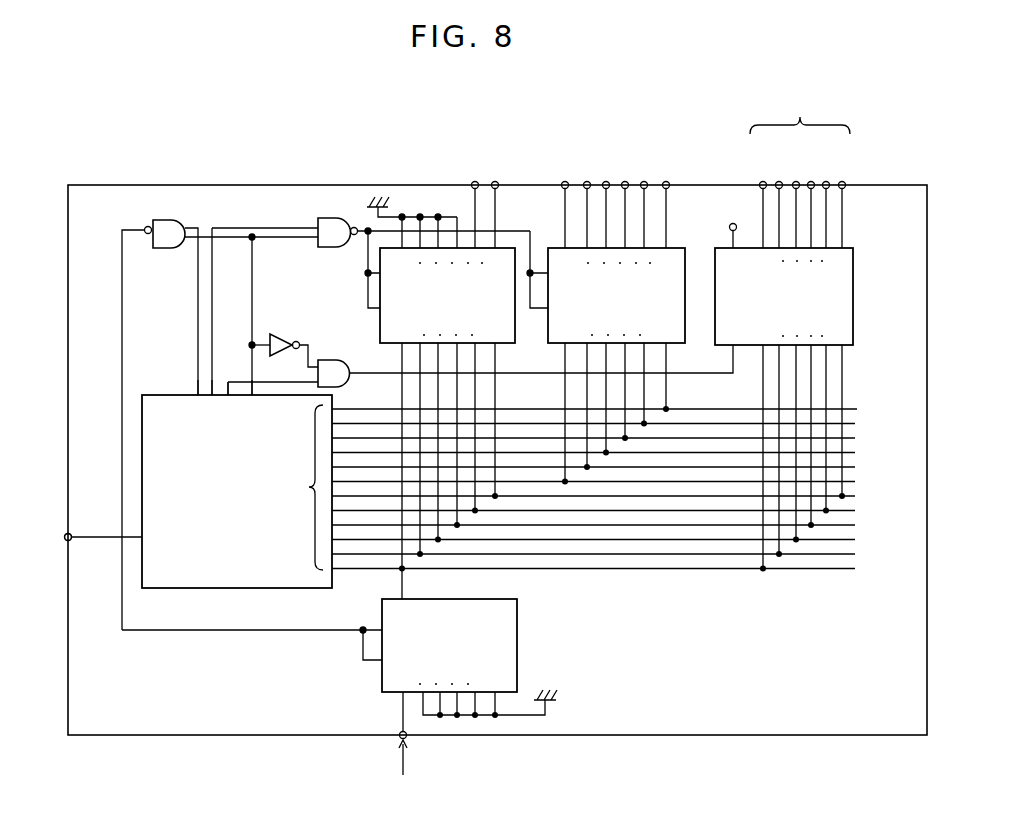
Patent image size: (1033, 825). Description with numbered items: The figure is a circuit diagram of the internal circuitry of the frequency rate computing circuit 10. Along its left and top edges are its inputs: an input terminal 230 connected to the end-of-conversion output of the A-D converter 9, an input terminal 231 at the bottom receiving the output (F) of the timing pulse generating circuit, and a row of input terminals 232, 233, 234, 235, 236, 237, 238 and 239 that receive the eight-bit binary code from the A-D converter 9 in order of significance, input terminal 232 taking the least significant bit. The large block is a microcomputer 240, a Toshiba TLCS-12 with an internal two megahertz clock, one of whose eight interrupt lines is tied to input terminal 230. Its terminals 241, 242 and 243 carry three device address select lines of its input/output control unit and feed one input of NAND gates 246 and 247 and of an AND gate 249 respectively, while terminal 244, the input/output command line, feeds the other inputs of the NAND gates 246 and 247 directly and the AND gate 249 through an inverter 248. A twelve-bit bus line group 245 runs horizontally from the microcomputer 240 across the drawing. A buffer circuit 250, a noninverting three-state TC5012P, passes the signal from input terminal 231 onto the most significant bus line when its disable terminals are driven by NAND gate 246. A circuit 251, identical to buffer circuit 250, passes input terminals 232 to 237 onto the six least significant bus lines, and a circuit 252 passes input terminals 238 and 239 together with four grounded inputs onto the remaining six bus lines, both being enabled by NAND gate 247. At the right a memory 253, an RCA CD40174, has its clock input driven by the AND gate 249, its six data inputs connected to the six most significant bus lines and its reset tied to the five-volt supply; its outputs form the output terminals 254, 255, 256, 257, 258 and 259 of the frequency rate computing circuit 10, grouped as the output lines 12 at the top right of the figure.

The A-D converter 9 is at (677, 136).
The frequency rate computing circuit 10 is at (200, 185).
The output signal lines 12 is at (807, 96).
The input terminal 230 is at (65, 541).
The input terminal 231 is at (406, 740).
The input terminal 232 is at (669, 183).
The input terminal 233 is at (645, 182).
The input terminal 234 is at (626, 182).
The input terminal 235 is at (606, 182).
The input terminal 236 is at (585, 182).
The input terminal 237 is at (564, 182).
The input terminal 238 is at (495, 182).
The input terminal 239 is at (472, 183).
The microcomputer 240 is at (185, 393).
The terminal 241 is at (198, 398).
The terminal 242 is at (213, 402).
The terminal 243 is at (227, 400).
The terminal 244 is at (253, 400).
The 12-bit bus line group 245 is at (590, 486).
The NAND gate 246 is at (175, 220).
The NAND gate 247 is at (322, 218).
The inverter 248 is at (273, 334).
The AND gate 249 is at (328, 360).
The buffer circuit 250 is at (517, 628).
The circuit 251 is at (685, 327).
The circuit 252 is at (517, 327).
The memory 253 is at (853, 323).
The output terminal 254 is at (762, 182).
The output terminal 255 is at (778, 182).
The output terminal 256 is at (795, 182).
The output terminal 257 is at (812, 182).
The output terminal 258 is at (827, 182).
The output terminal 259 is at (845, 183).